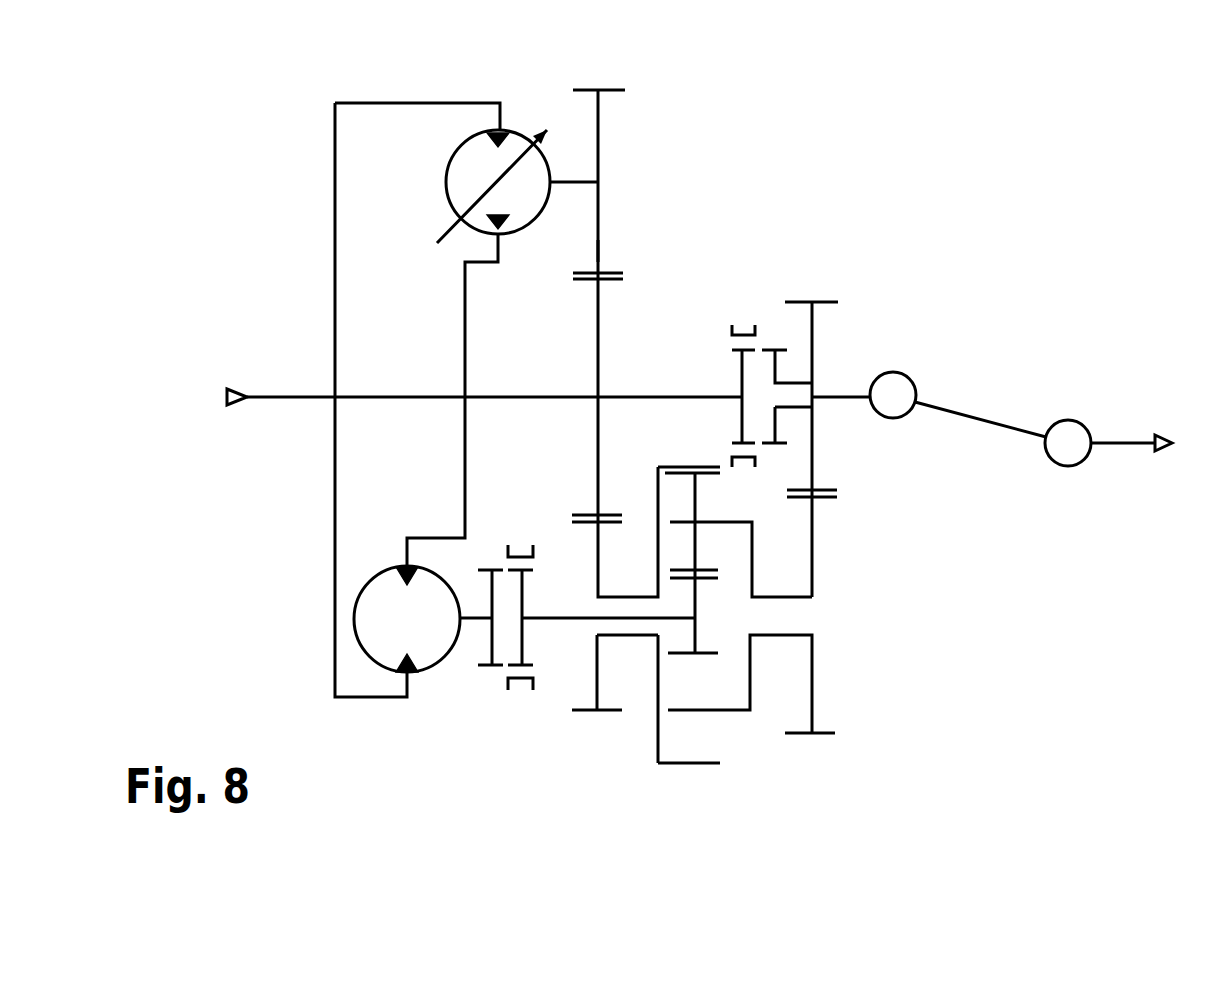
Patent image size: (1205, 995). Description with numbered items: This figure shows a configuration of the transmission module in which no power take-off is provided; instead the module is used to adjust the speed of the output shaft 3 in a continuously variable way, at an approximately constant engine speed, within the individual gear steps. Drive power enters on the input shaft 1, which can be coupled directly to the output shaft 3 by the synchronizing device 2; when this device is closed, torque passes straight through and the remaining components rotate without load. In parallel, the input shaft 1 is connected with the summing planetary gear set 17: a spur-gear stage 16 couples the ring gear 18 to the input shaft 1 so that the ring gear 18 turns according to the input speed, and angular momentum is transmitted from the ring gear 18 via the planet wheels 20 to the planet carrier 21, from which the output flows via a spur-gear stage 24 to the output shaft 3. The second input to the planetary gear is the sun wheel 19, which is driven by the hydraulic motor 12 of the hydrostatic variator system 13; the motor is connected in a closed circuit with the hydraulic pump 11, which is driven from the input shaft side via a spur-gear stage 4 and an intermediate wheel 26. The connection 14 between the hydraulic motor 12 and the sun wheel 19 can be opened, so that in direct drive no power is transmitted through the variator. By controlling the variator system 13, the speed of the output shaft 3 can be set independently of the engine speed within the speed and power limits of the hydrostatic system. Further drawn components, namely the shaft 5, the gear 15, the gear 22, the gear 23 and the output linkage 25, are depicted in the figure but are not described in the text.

The input shaft 1 is at (285, 395).
The synchronizing device 2 is at (717, 313).
The output shaft 3 is at (843, 390).
The spur-gear stage 4 is at (557, 273).
The shaft 5 is at (597, 307).
The hydraulic pump 11 is at (517, 130).
The hydraulic motor 12 is at (365, 655).
The hydrostatic variator system 13 is at (305, 177).
The connection 14 is at (502, 712).
The gear 15 is at (598, 712).
The spur-gear stage 16 is at (558, 498).
The summing planetary gear set 17 is at (686, 770).
The ring gear 18 is at (655, 680).
The sun wheel 19 is at (700, 655).
The planet wheels 20 is at (690, 487).
The planet carrier 21 is at (755, 537).
The gear 22 is at (812, 652).
The gear 23 is at (812, 443).
The spur-gear stage 24 is at (813, 740).
The output linkage 25 is at (990, 395).
The intermediate wheel 26 is at (598, 253).